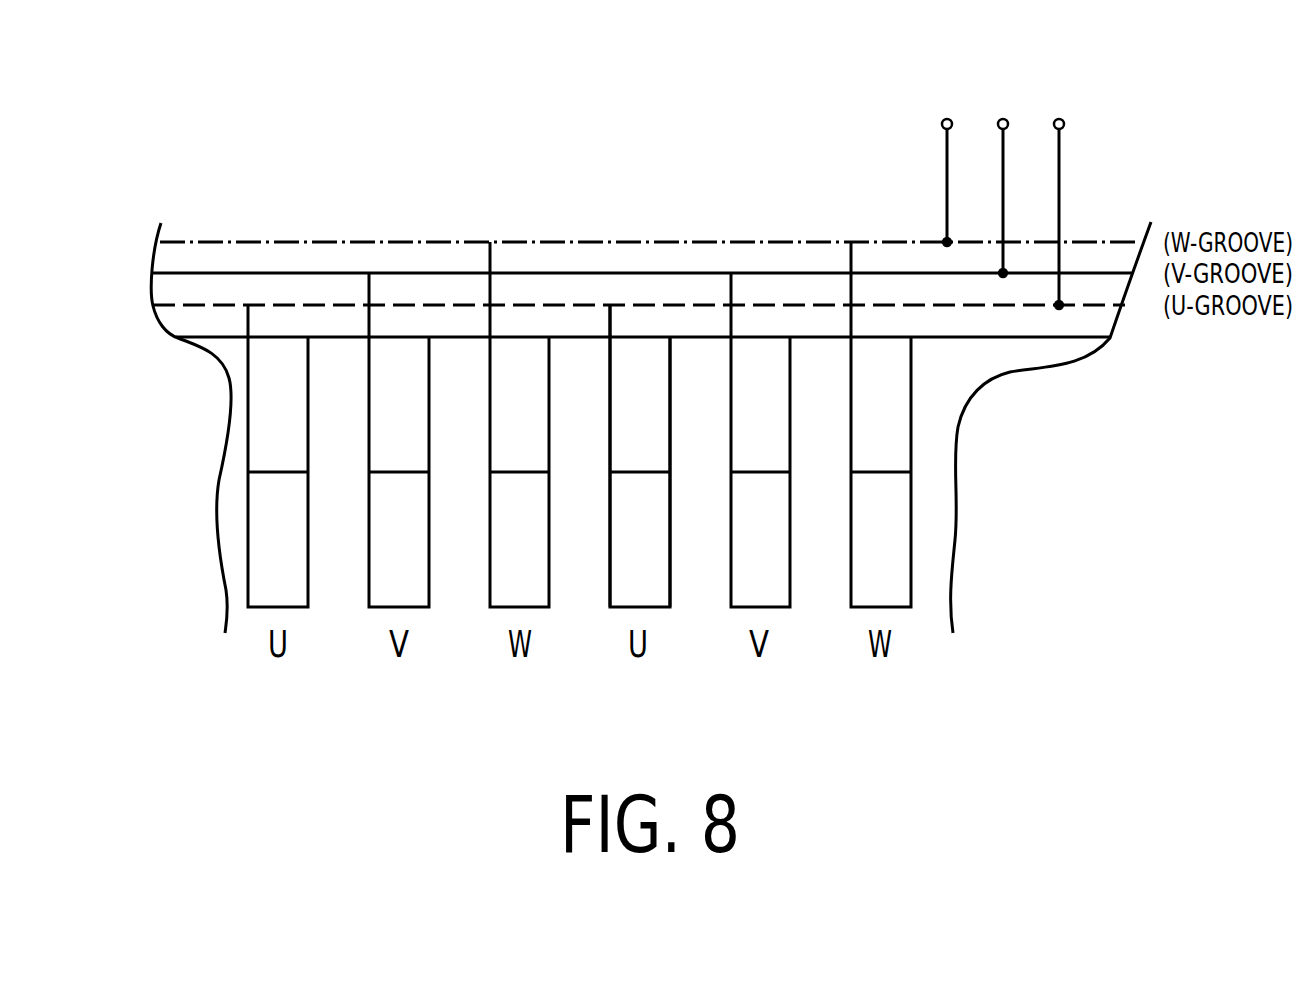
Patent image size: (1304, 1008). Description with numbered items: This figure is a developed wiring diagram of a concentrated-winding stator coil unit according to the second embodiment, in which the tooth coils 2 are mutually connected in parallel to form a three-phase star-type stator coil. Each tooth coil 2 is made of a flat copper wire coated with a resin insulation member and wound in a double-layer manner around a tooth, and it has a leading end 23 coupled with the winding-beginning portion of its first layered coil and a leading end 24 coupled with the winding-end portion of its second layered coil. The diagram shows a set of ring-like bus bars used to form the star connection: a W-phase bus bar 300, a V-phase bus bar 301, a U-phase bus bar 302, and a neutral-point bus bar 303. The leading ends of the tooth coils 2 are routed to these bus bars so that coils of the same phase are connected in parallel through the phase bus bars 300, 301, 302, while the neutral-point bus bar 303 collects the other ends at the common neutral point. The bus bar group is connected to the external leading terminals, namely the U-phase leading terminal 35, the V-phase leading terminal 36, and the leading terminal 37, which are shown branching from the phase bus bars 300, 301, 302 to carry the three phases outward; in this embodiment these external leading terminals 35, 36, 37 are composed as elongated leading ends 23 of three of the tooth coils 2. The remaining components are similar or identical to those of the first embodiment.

The tooth coil 2 is at (640, 483).
The leading end 23 is at (609, 393).
The leading end 24 is at (672, 391).
The U-phase leading terminal 35 is at (946, 155).
The V-phase leading terminal 36 is at (1002, 155).
The V-phase leading terminal 37 is at (1058, 155).
The W-phase bus bar 300 is at (1080, 242).
The V-phase bus bar 301 is at (1112, 273).
The U-phase bus bar 302 is at (1015, 307).
The neutral-point bus bar 303 is at (1067, 340).